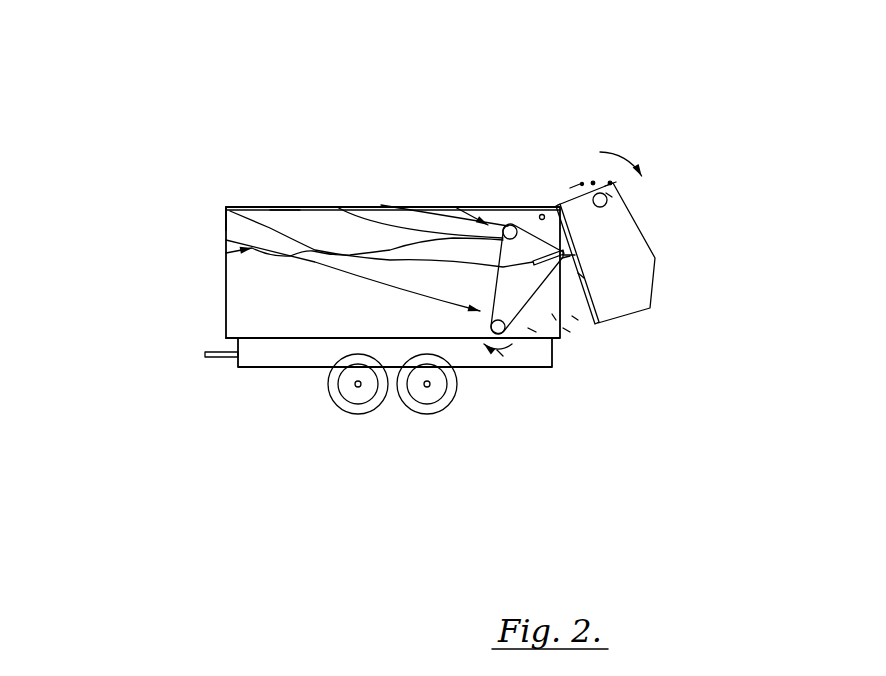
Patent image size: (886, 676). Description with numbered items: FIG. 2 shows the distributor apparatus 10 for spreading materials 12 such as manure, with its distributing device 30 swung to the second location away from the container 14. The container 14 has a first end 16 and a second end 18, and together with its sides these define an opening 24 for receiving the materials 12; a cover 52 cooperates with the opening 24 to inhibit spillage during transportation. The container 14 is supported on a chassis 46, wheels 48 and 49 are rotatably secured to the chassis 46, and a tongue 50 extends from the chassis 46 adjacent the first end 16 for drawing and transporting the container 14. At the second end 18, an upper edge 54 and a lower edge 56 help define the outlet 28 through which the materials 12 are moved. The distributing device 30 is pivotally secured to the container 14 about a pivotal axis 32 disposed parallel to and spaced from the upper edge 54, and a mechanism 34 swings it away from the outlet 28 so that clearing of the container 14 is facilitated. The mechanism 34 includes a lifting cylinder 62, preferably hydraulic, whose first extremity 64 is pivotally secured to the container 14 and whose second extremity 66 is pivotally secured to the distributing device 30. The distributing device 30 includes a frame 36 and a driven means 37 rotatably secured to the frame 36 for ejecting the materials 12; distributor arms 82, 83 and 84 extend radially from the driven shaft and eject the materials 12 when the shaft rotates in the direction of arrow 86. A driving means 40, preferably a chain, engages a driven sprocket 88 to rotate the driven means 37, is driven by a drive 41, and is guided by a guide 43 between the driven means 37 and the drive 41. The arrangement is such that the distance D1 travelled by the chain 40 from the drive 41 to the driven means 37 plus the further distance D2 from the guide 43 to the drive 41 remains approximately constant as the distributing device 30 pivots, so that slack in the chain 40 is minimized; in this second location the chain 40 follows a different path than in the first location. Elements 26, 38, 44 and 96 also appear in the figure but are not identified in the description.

The distributor apparatus 10 is at (368, 140).
The materials 12 is at (329, 306).
The container 14 is at (258, 206).
The first end 16 is at (232, 328).
The second end 18 is at (532, 330).
The opening 24 is at (410, 205).
The rear wall 26 is at (553, 317).
The outlet 28 is at (575, 318).
The distributing device 30 is at (632, 270).
The pivotal axis 32 is at (540, 214).
The mechanism 34 is at (381, 205).
The frame 36 is at (563, 255).
The driven means 37 is at (576, 188).
The hinge pin 38 is at (582, 183).
The driving means 40 is at (600, 320).
The drive 41 is at (226, 240).
The guide 43 is at (455, 207).
The link arm 44 is at (503, 222).
The chassis 46 is at (258, 359).
The wheel 48 is at (350, 395).
The wheel 49 is at (420, 405).
The tongue 50 is at (203, 353).
The cover 52 is at (283, 206).
The upper edge 54 is at (610, 197).
The lower edge 56 is at (566, 330).
The lifting cylinder 62 is at (582, 277).
The first extremity 64 is at (226, 207).
The second extremity 66 is at (565, 259).
The distributor arm 82 is at (610, 182).
The distributor arm 83 is at (628, 172).
The distributor arm 84 is at (593, 182).
The arrow 86 is at (616, 185).
The driven sprocket 88 is at (578, 198).
The pivot axis 96 is at (500, 353).
The distance D1 is at (519, 333).
The further distance D2 is at (337, 207).